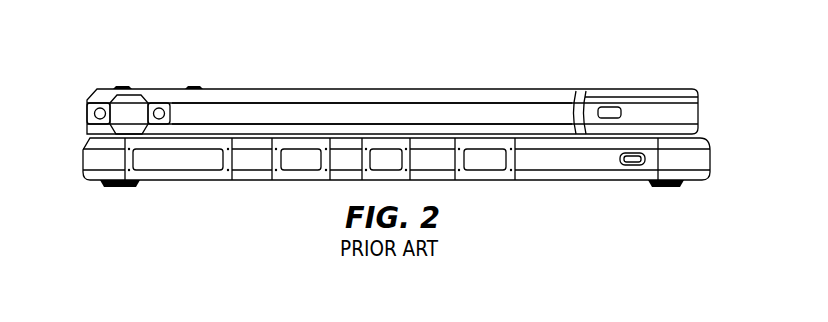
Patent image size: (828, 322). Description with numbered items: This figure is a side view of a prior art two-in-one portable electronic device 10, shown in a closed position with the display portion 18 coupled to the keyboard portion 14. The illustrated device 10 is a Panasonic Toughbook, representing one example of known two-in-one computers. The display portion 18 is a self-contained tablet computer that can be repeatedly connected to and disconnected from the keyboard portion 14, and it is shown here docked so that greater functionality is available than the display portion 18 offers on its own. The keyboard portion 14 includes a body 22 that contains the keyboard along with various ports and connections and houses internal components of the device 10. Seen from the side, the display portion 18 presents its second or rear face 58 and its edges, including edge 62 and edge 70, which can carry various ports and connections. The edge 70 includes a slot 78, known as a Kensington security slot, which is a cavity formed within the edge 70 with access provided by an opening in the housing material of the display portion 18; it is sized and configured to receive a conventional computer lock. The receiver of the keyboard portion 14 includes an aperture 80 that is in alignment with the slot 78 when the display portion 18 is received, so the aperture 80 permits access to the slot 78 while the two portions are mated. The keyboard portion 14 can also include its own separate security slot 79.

The portable electronic device 10 is at (721, 63).
The keyboard portion 14 is at (86, 181).
The display portion 18 is at (99, 92).
The body 22 is at (220, 181).
The rear face 58 is at (288, 88).
The edge 62 is at (84, 108).
The edge 70 is at (222, 113).
The slot 78 is at (613, 110).
The security slot 79 is at (630, 166).
The aperture 80 is at (607, 107).